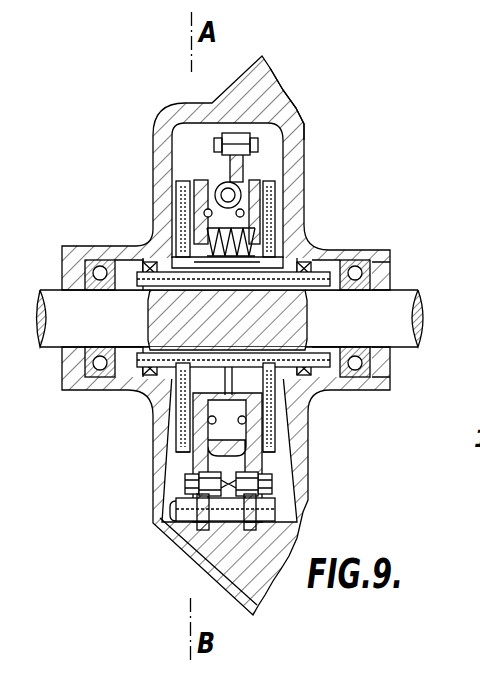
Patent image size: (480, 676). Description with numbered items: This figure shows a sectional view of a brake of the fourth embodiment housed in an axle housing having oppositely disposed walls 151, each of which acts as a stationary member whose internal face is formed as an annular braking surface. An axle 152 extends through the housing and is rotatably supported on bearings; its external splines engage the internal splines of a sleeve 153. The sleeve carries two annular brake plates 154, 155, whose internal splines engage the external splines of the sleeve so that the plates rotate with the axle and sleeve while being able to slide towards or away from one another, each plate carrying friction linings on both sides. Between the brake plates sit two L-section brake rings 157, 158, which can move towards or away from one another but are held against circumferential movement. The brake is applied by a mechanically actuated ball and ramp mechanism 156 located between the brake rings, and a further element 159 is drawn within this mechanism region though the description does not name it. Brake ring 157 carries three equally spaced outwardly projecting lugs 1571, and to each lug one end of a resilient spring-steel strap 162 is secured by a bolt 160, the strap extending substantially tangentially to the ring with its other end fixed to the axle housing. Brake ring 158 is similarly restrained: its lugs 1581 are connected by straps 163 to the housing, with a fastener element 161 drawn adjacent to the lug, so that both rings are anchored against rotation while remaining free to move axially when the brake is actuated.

The walls 151 is at (167, 197).
The axle 152 is at (378, 315).
The sleeve 153 is at (180, 258).
The brake plate 154 is at (182, 180).
The brake plate 155 is at (283, 172).
The ball and ramp mechanism 156 is at (230, 440).
The brake ring 157 is at (185, 411).
The lug 1571 is at (190, 468).
The brake ring 158 is at (250, 406).
The lug 1581 is at (272, 468).
The spring 159 is at (230, 243).
The bolt 160 is at (187, 485).
The right bolt nut 161 is at (265, 488).
The strap 162 is at (213, 498).
The strap 163 is at (252, 518).